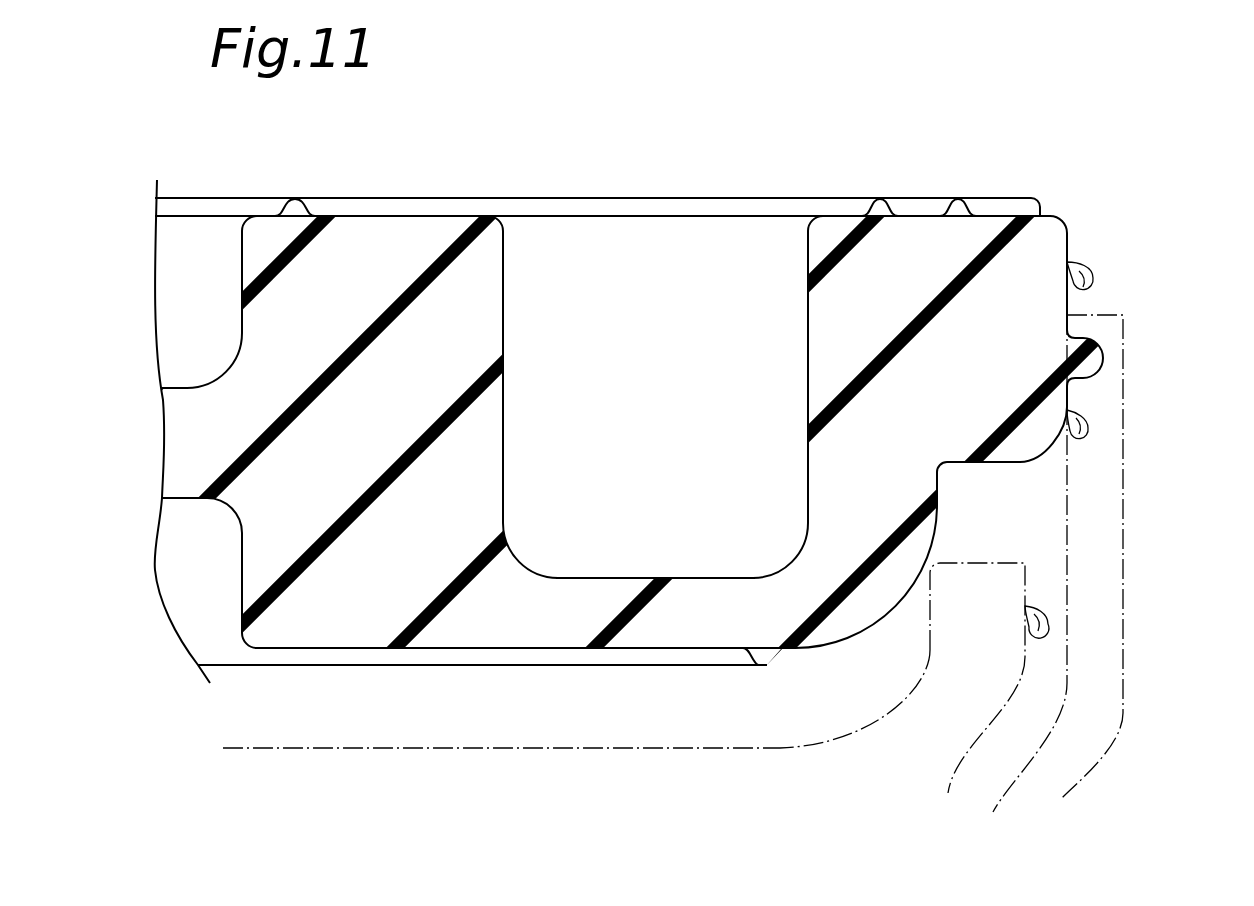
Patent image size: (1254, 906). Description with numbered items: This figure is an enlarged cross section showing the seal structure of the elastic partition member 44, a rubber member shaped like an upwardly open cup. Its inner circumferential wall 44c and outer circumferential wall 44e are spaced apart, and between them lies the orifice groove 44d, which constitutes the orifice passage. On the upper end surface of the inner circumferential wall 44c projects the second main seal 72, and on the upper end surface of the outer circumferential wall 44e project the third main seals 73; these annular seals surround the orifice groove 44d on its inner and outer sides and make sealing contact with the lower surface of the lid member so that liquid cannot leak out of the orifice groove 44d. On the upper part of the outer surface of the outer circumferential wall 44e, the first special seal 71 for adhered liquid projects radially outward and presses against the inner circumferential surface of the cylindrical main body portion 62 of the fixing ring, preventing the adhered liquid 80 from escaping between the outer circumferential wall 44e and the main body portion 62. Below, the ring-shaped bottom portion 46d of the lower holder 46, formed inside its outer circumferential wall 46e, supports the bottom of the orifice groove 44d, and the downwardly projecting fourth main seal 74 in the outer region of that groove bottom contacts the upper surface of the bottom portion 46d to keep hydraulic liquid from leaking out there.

The elastic partition member 44 is at (220, 190).
The second main seal 72 is at (295, 199).
The third main seals 73 is at (957, 199).
The inner circumferential wall 44c is at (503, 280).
The orifice groove 44d is at (630, 578).
The outer circumferential wall 44e is at (1067, 245).
The first special seal for adhered liquid 71 is at (1104, 358).
The adhered liquid 80 is at (1093, 280).
The fourth main seal 74 is at (763, 668).
The lower holder 46 is at (645, 563).
The bottom portion 46d is at (783, 748).
The outer circumferential wall 46e is at (990, 563).
The main body portion 62 is at (1118, 482).